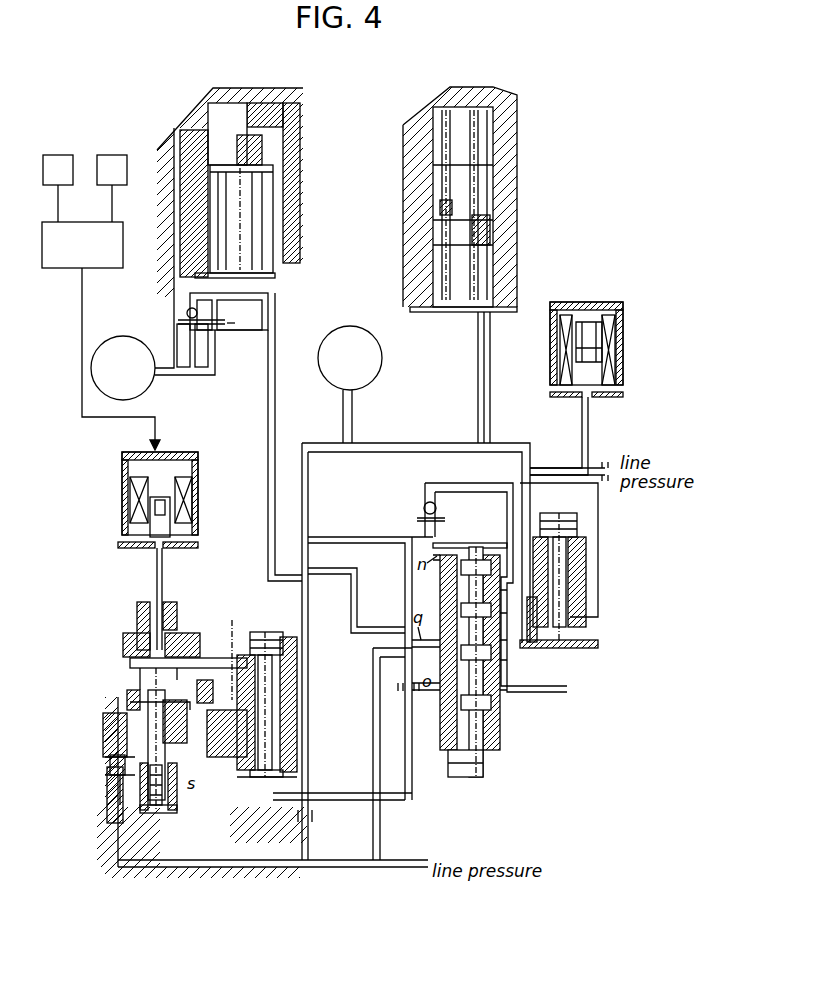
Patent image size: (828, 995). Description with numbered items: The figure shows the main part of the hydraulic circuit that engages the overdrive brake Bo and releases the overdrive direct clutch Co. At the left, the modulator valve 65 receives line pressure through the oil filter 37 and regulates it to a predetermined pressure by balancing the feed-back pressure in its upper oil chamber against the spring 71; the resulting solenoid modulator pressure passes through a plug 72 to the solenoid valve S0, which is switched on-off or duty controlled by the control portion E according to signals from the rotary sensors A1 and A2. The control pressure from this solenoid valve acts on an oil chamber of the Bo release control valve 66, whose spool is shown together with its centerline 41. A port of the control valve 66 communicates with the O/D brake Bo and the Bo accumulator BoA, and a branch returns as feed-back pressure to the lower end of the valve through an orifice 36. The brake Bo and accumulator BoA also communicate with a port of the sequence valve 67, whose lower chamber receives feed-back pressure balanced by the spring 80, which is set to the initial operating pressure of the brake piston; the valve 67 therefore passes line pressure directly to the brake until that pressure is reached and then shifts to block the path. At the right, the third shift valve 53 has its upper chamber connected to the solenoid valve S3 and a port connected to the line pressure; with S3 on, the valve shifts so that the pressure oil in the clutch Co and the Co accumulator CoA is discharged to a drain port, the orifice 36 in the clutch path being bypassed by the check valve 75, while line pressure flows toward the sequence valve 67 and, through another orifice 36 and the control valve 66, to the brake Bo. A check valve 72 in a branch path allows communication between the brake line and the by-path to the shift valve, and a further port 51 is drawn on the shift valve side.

The orifice 36 is at (227, 323).
The oil filter 37 is at (113, 762).
The shaft 41 is at (230, 628).
The port 51 is at (584, 693).
The third shift valve 53 is at (470, 533).
The SD modulator valve 65 is at (103, 618).
The Bo release control valve 66 is at (280, 623).
The sequence valve 67 is at (602, 530).
The spring 71 is at (140, 800).
The check valve 72 is at (425, 505).
The check valve 75 is at (187, 315).
The spring 80 is at (567, 558).
The rotary sensor A1 is at (58, 188).
The rotary sensor A2 is at (112, 188).
The control portion E is at (123, 243).
The Co accumulator CoA is at (313, 138).
The Bo accumulator BoA is at (518, 137).
The O/D direct clutch Co is at (123, 368).
The O/D brake Bo is at (350, 384).
The solenoid valve SD S0 is at (118, 472).
The solenoid valve S3 is at (590, 297).